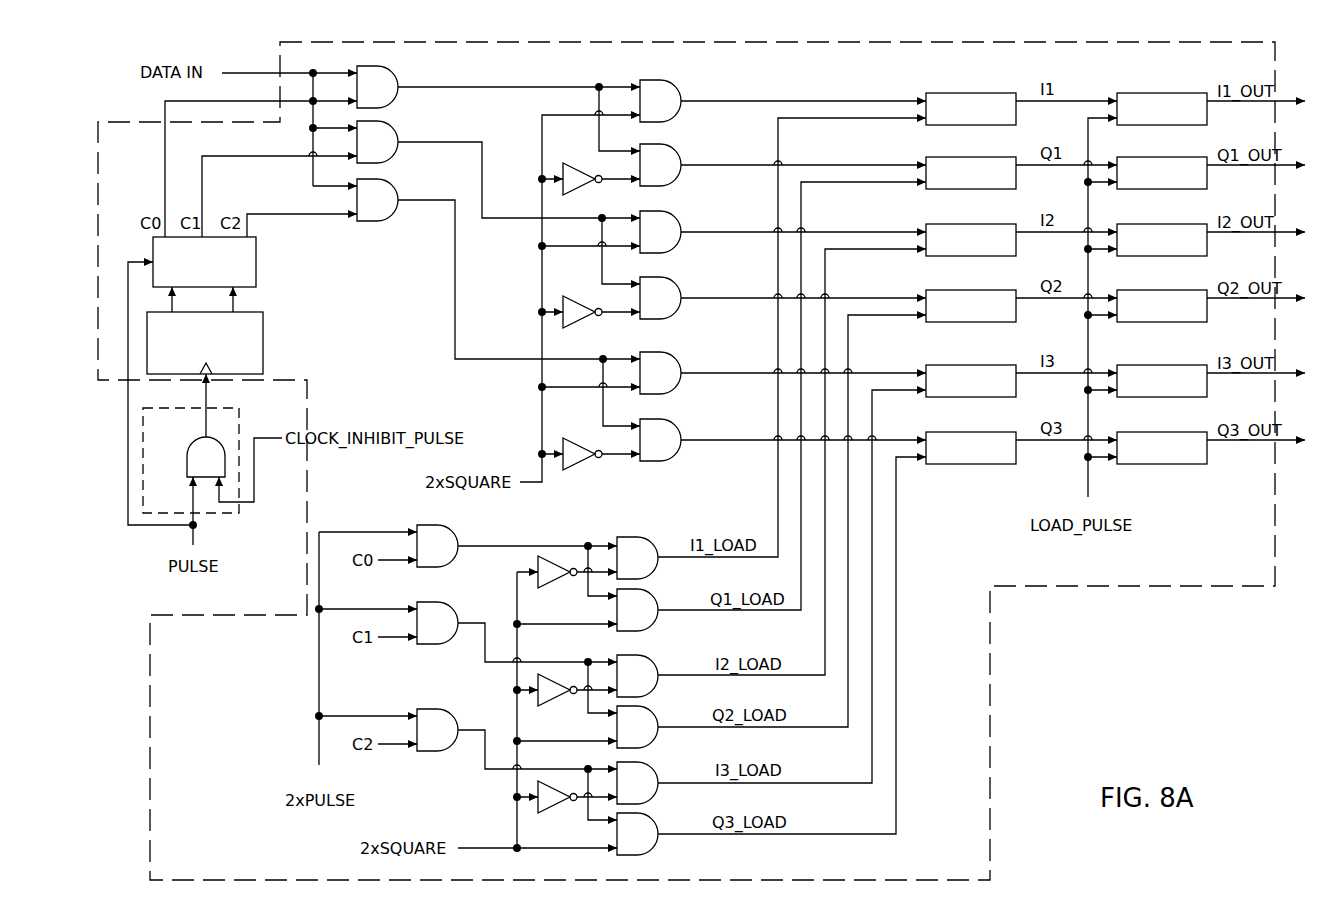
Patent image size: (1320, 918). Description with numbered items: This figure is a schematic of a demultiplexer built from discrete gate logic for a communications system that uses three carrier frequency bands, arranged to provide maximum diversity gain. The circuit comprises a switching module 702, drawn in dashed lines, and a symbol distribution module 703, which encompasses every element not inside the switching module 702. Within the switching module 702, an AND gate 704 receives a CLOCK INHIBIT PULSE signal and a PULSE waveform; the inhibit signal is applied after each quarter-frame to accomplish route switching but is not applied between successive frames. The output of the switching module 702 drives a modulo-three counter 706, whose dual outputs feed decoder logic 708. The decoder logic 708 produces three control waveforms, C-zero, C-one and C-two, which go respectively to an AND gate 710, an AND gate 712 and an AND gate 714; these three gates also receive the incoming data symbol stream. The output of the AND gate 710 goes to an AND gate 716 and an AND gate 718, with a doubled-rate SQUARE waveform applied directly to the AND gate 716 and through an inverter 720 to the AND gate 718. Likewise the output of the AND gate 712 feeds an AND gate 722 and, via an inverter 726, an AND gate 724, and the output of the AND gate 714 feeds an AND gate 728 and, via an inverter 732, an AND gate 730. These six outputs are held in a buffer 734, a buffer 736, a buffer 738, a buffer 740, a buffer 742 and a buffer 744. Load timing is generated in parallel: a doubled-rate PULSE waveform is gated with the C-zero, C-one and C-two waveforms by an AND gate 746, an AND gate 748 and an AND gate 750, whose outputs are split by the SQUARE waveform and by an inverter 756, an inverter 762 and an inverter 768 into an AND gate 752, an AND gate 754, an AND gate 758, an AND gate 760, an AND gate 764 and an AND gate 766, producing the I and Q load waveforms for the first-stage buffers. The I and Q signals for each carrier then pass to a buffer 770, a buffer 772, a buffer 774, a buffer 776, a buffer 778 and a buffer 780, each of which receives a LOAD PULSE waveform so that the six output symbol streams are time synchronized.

The switching module 702 is at (236, 410).
The symbol distribution module 703 is at (1040, 611).
The AND gate 704 is at (196, 441).
The modulo-3 counter 706 is at (263, 334).
The decoder logic 708 is at (256, 252).
The AND gate 710 is at (392, 104).
The AND gate 712 is at (392, 159).
The AND gate 714 is at (392, 217).
The AND gate 716 is at (670, 81).
The AND gate 718 is at (670, 145).
The inverter 720 is at (571, 190).
The AND gate 722 is at (670, 212).
The AND gate 724 is at (670, 278).
The inverter 726 is at (571, 323).
The AND gate 728 is at (670, 353).
The AND gate 730 is at (670, 420).
The inverter 732 is at (571, 465).
The buffer 734 is at (960, 93).
The buffer 736 is at (960, 157).
The buffer 738 is at (960, 224).
The buffer 740 is at (960, 290).
The buffer 742 is at (960, 365).
The buffer 744 is at (960, 432).
The AND gate 746 is at (447, 526).
The AND gate 748 is at (447, 603).
The AND gate 750 is at (447, 710).
The AND gate 752 is at (663, 530).
The AND gate 754 is at (647, 590).
The inverter 756 is at (551, 585).
The AND gate 758 is at (647, 656).
The AND gate 760 is at (647, 707).
The inverter 762 is at (551, 703).
The AND gate 764 is at (647, 763).
The AND gate 766 is at (647, 814).
The inverter 768 is at (551, 810).
The buffer 770 is at (1151, 93).
The buffer 772 is at (1151, 157).
The buffer 774 is at (1151, 224).
The buffer 776 is at (1151, 290).
The buffer 778 is at (1151, 365).
The buffer 780 is at (1151, 432).